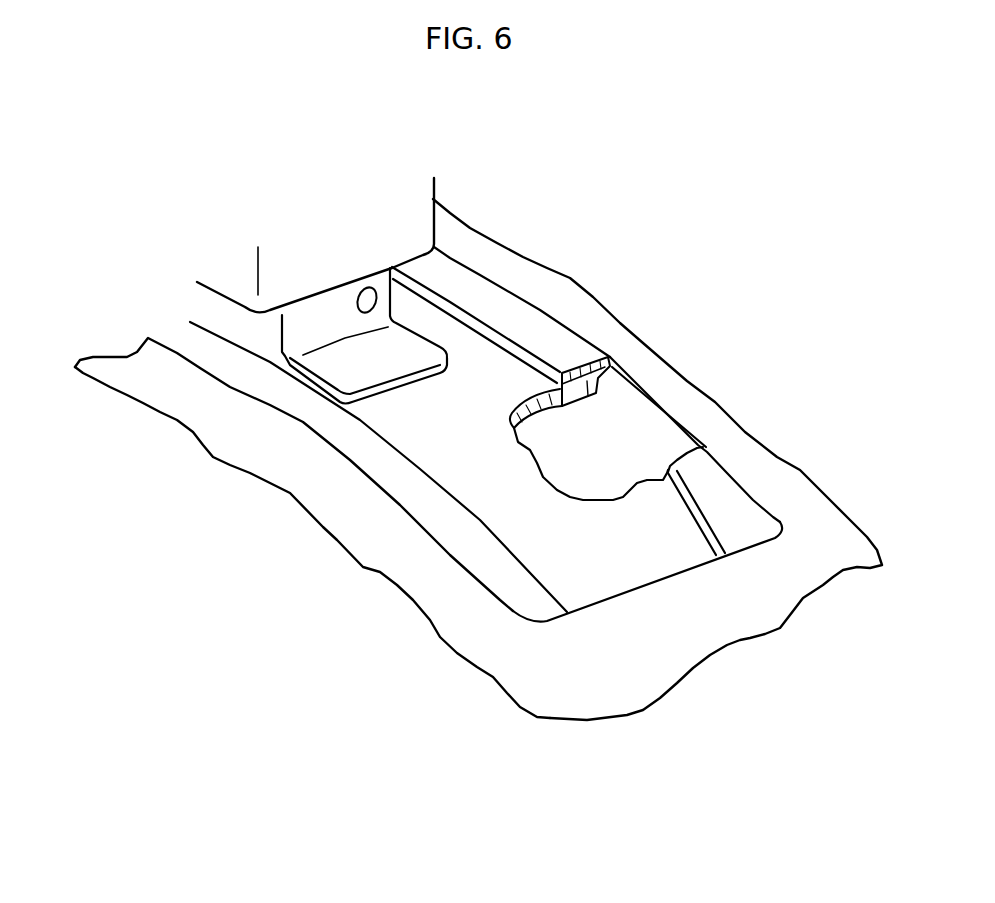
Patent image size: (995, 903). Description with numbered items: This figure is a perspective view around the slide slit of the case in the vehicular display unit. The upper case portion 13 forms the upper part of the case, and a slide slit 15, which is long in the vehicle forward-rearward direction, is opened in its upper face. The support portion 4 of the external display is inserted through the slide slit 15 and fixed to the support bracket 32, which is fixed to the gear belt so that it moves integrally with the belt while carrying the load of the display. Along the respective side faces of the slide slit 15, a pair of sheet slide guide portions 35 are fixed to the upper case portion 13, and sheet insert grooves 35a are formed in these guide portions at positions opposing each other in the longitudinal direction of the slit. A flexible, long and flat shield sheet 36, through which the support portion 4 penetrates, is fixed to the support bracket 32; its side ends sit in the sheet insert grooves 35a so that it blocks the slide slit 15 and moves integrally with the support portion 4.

The support portion 4 is at (407, 217).
The upper case portion 13 is at (412, 575).
The slide slit 15 is at (617, 587).
The support bracket 32 is at (390, 343).
The sheet slide guide portion 35 is at (722, 483).
The sheet insert groove 35a is at (578, 410).
The shield sheet 36 is at (432, 450).